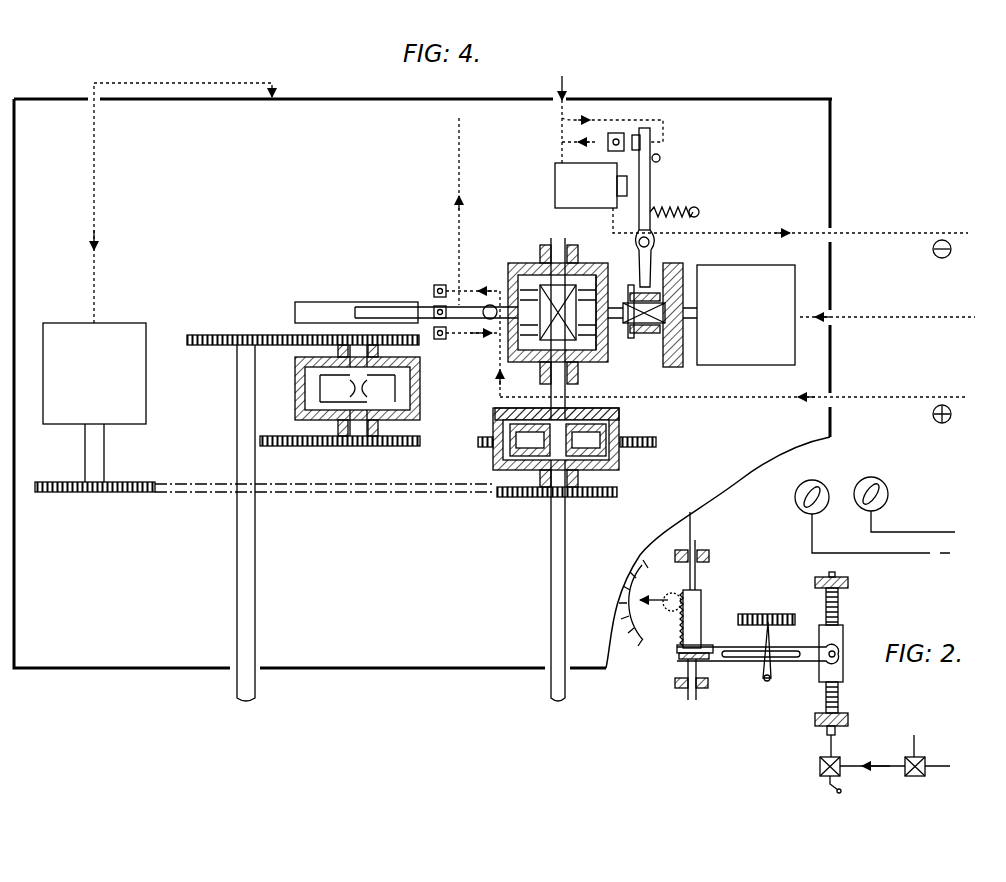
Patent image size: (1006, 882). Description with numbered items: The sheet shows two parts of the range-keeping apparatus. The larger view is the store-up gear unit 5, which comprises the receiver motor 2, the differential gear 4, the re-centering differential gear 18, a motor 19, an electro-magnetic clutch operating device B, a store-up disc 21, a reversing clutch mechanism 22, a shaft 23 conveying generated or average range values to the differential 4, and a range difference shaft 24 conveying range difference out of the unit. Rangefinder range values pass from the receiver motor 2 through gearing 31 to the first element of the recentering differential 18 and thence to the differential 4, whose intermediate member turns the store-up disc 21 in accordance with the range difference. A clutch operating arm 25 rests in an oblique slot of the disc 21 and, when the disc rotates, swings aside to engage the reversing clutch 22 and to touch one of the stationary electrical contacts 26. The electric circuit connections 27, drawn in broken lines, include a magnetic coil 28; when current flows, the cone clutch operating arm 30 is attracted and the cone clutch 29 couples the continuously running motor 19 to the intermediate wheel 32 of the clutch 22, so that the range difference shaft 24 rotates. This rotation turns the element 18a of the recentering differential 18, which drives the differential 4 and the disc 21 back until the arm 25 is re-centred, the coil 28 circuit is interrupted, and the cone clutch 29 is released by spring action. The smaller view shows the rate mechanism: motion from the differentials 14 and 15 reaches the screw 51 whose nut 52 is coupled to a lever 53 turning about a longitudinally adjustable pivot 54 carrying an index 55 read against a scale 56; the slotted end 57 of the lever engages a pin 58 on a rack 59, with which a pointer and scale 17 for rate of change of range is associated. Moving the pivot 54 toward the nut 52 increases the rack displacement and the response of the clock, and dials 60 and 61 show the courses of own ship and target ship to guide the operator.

In FIG. 4, the receiver motor 2 is at (127, 323).
In FIG. 4, the differential gear 4 is at (300, 386).
In FIG. 4, the store-up gear unit 5 is at (340, 99).
In FIG. 2, the differential 14 is at (921, 757).
In FIG. 2, the differential 15 is at (821, 773).
In FIG. 2, the pointer and scale 17 is at (676, 590).
In FIG. 4, the re-centering differential gear 18 is at (622, 464).
In FIG. 4, the element of recentering differential 18a is at (600, 408).
In FIG. 4, the motor 19 is at (746, 315).
In FIG. 4, the store-up disc 21 is at (335, 302).
In FIG. 4, the reversing clutch mechanism 22 is at (522, 280).
In FIG. 4, the shaft 23 is at (237, 697).
In FIG. 4, the range difference shaft 24 is at (551, 696).
In FIG. 4, the clutch operating arm 25 is at (465, 318).
In FIG. 4, the stationary electrical contacts 26 is at (438, 306).
In FIG. 4, the electric circuit connections 27 is at (575, 90).
In FIG. 4, the magnetic coil 28 is at (591, 185).
In FIG. 4, the cone clutch 29 is at (675, 366).
In FIG. 4, the cone clutch operating arm 30 is at (650, 149).
In FIG. 4, the gearing 31 is at (400, 497).
In FIG. 4, the intermediate wheel 32 is at (608, 348).
In FIG. 4, the electro-magnetic clutch operating device B is at (666, 209).
In FIG. 2, the screw 51 is at (839, 703).
In FIG. 2, the nut 52 is at (843, 633).
In FIG. 2, the lever 53 is at (810, 661).
In FIG. 2, the longitudinally adjustable pivot 54 is at (757, 657).
In FIG. 2, the index 55 is at (765, 634).
In FIG. 2, the scale 56 is at (788, 606).
In FIG. 2, the slotted end 57 is at (700, 670).
In FIG. 2, the pin 58 is at (677, 652).
In FIG. 2, the rack 59 is at (702, 612).
In FIG. 2, the dial 60 is at (872, 516).
In FIG. 2, the dial 61 is at (886, 505).